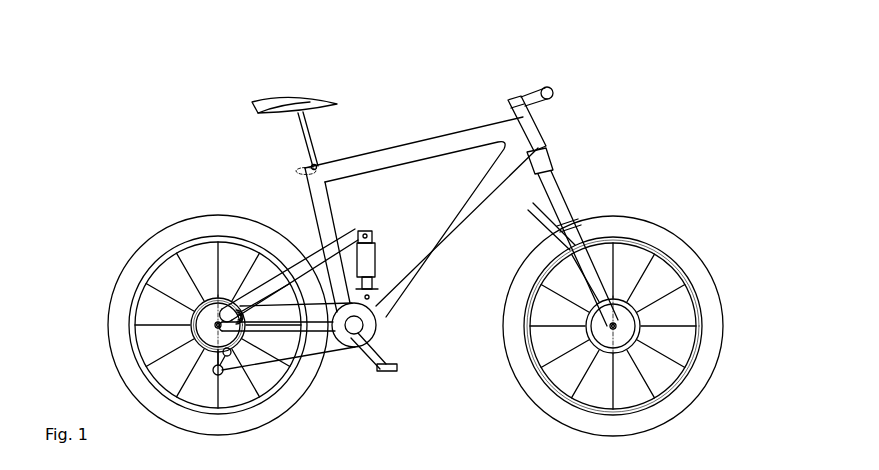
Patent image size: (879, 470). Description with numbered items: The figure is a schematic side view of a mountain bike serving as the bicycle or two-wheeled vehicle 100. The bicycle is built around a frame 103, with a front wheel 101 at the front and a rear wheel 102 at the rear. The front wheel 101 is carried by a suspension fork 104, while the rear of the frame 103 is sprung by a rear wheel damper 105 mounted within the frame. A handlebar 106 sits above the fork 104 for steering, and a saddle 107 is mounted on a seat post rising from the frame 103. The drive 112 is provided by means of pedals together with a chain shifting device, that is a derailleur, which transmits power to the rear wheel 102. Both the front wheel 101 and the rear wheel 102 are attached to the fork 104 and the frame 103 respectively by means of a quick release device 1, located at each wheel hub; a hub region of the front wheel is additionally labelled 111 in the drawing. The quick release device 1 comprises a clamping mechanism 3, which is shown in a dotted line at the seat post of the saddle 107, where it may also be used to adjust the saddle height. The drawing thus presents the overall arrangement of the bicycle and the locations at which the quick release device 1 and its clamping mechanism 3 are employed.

The two-wheeled vehicle 100 is at (177, 125).
The front wheel 101 is at (683, 217).
The rear wheel 102 is at (153, 222).
The frame 103 is at (440, 142).
The suspension fork 104 is at (580, 216).
The rear wheel damper 105 is at (368, 253).
The handlebar 106 is at (549, 88).
The saddle 107 is at (311, 100).
The front hub 111 is at (630, 345).
The drive 112 is at (379, 385).
The quick release device 1 is at (186, 319).
The clamping mechanism 3 is at (216, 326).